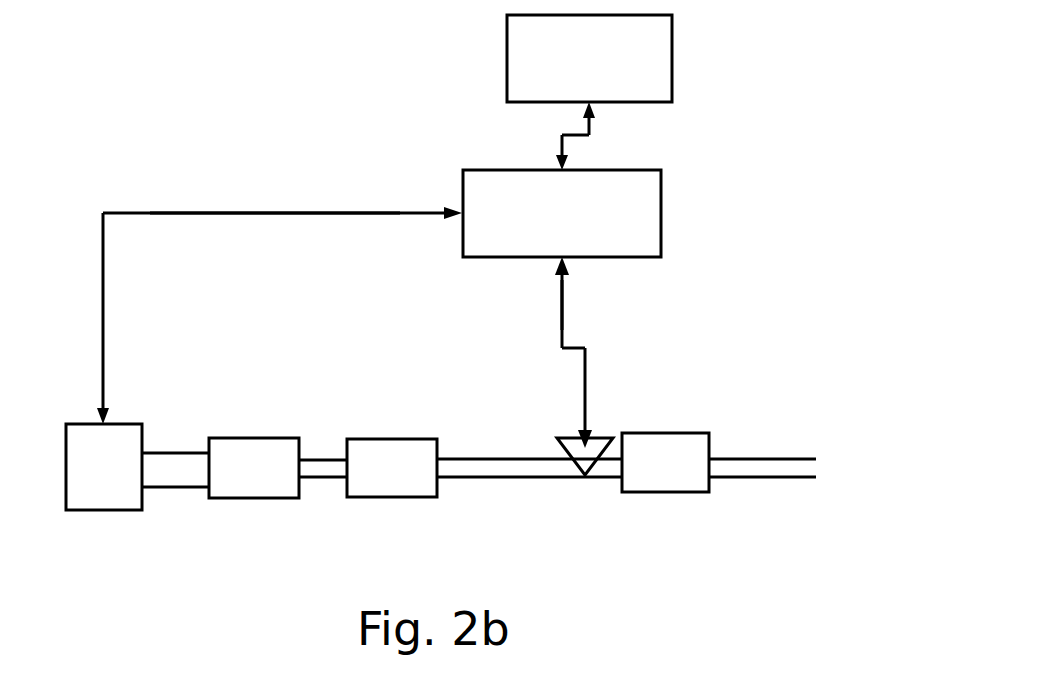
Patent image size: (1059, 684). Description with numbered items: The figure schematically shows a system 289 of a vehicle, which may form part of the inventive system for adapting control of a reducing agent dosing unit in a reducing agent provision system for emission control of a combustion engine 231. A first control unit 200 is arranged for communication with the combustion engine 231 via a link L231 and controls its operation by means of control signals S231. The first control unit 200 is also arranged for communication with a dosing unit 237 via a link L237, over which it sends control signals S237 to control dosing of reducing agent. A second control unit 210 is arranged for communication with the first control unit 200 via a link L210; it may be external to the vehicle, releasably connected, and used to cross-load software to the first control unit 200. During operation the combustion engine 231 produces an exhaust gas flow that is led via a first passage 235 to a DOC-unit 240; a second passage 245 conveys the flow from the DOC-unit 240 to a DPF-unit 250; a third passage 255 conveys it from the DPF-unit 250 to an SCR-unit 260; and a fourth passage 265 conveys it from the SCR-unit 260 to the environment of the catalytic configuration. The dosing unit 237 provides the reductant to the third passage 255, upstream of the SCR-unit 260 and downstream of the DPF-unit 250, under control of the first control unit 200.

The system 289 is at (386, 102).
The second control unit 210 is at (568, 71).
The link L210 is at (589, 135).
The first control unit 200 is at (541, 225).
The control signals S231 is at (279, 303).
The link L231 is at (260, 212).
The control signals S237 is at (599, 352).
The link L237 is at (563, 307).
The dosing unit 237 is at (613, 437).
The combustion engine 231 is at (83, 481).
The first passage 235 is at (160, 488).
The DOC-unit 240 is at (233, 480).
The second passage 245 is at (313, 477).
The DPF-unit 250 is at (371, 481).
The third passage 255 is at (493, 479).
The SCR-unit 260 is at (644, 475).
The fourth passage 265 is at (723, 479).